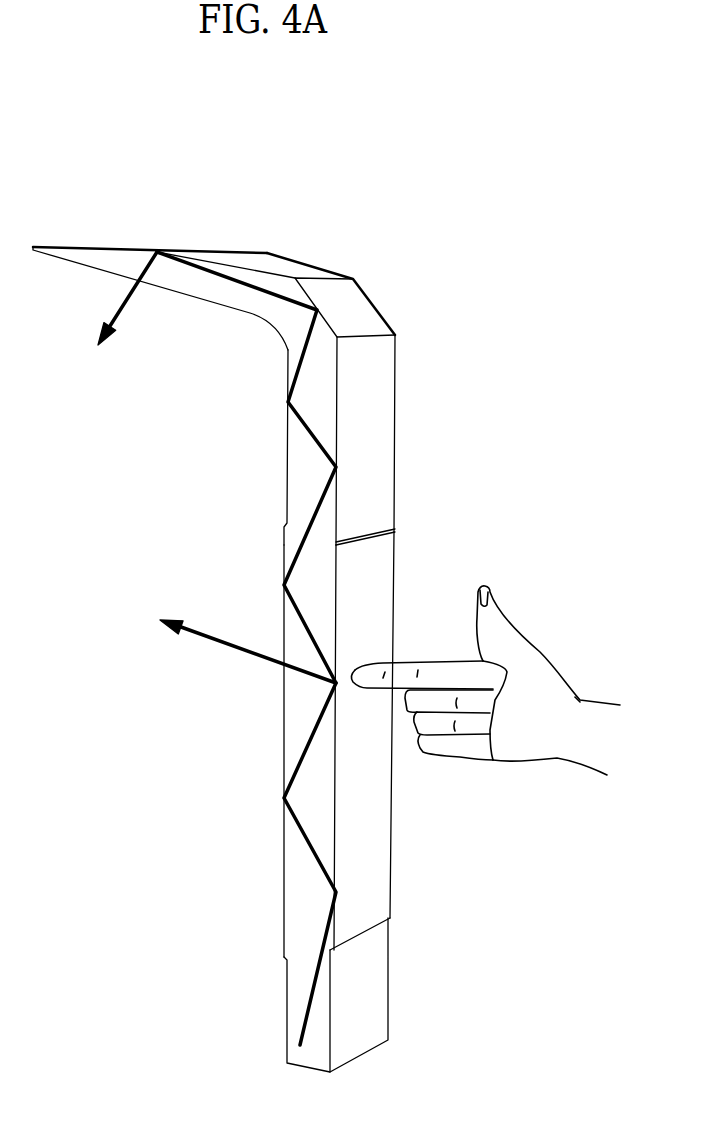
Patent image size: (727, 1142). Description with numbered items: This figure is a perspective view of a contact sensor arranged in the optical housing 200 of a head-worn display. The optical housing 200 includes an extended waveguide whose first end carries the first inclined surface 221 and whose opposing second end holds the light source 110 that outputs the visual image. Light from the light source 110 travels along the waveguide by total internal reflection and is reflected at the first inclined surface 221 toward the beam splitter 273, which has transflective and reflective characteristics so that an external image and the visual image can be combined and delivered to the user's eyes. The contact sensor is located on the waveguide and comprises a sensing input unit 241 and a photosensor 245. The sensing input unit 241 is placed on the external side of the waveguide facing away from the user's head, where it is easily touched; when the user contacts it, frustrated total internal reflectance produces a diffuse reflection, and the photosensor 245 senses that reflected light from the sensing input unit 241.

The light source 110 is at (300, 1018).
The optical housing 200 is at (378, 433).
The first inclined surface 221 is at (362, 308).
The sensing input unit 241 is at (377, 875).
The photosensor 245 is at (283, 753).
The beam splitter 273 is at (87, 251).